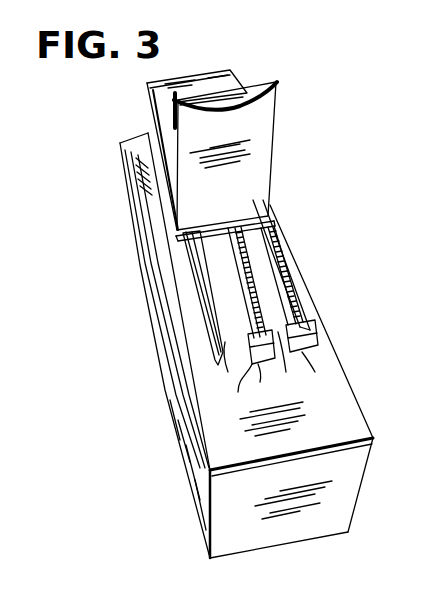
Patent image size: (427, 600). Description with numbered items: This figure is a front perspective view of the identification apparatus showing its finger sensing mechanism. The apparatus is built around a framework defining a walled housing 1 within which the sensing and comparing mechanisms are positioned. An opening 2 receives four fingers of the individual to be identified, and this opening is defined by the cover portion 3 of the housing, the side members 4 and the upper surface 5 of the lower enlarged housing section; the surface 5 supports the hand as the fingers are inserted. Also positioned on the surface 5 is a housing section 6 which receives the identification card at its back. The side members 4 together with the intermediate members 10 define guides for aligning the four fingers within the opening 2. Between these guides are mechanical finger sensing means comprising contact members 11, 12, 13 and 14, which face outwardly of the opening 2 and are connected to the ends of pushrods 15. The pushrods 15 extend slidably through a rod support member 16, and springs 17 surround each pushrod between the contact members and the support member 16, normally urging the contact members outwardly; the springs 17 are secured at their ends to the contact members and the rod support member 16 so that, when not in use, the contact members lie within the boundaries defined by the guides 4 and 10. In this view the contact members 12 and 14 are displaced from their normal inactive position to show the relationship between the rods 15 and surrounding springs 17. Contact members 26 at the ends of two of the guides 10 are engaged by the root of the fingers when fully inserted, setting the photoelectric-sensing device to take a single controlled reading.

The walled housing 1 is at (124, 127).
The opening 2 is at (252, 108).
The cover portion 3 is at (243, 176).
The side members 4 is at (205, 335).
The upper surface 5 is at (338, 414).
The housing section 6 is at (157, 153).
The intermediate members 10 is at (210, 287).
The contact member 11 is at (218, 363).
The contact member 12 is at (266, 366).
The contact member 13 is at (277, 358).
The contact member 14 is at (305, 353).
The pushrods 15 is at (223, 250).
The rod support member 16 is at (240, 216).
The springs 17 is at (200, 308).
The contact members 26 is at (244, 365).